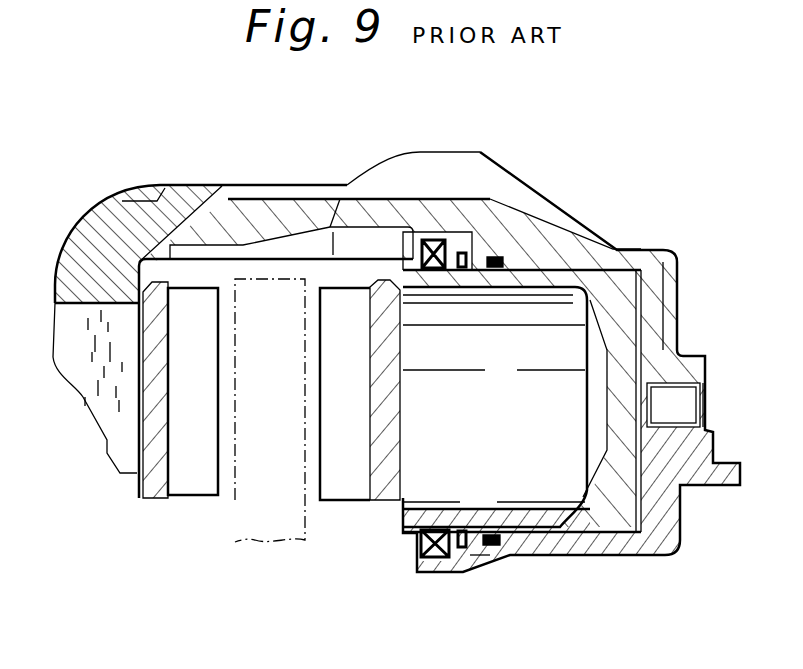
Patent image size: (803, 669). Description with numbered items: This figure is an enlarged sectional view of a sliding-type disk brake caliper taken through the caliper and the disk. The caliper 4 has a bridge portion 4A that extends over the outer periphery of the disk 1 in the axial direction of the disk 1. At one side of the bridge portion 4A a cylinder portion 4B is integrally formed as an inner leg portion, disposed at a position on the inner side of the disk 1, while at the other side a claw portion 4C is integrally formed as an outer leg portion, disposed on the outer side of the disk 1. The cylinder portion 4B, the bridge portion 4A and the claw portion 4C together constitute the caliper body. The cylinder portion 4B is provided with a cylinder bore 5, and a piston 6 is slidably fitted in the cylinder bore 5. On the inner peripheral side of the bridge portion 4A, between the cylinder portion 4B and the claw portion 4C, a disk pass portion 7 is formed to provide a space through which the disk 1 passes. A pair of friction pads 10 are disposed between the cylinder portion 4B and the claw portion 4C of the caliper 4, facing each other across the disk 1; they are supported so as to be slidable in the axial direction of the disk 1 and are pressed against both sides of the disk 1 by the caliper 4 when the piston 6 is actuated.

The disk 1 is at (235, 500).
The caliper 4 is at (518, 190).
The bridge portion 4A is at (352, 208).
The cylinder portion 4B is at (662, 273).
The claw portion 4C is at (95, 392).
The cylinder bore 5 is at (608, 532).
The piston 6 is at (518, 522).
The disk pass portion 7 is at (213, 262).
The friction pads 10 is at (183, 483).